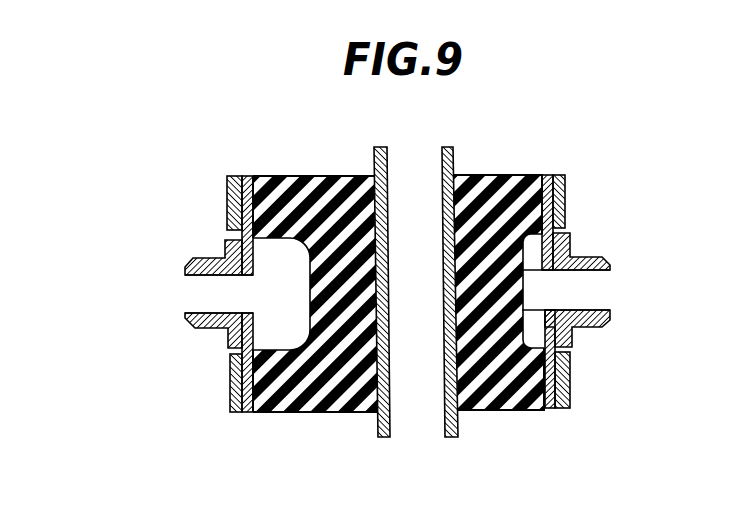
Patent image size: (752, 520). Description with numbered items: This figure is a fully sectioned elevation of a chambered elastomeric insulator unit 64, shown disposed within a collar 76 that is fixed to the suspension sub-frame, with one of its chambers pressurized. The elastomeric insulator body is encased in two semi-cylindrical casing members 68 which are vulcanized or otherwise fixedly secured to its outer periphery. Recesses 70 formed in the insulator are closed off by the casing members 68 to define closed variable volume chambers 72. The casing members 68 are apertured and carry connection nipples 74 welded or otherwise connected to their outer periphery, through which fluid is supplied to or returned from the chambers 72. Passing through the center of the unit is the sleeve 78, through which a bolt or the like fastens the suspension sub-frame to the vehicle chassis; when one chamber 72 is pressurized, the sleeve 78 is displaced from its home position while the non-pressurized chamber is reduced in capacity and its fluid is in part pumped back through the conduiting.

The chambered elastomeric insulator unit 64 is at (133, 186).
The semi-cylindrical casing members 68 is at (251, 411).
The recesses 70 is at (310, 300).
The closed variable volume chambers 72 is at (277, 333).
The connection nipples 74 is at (185, 265).
The collar 76 is at (228, 195).
The sleeve 78 is at (407, 162).